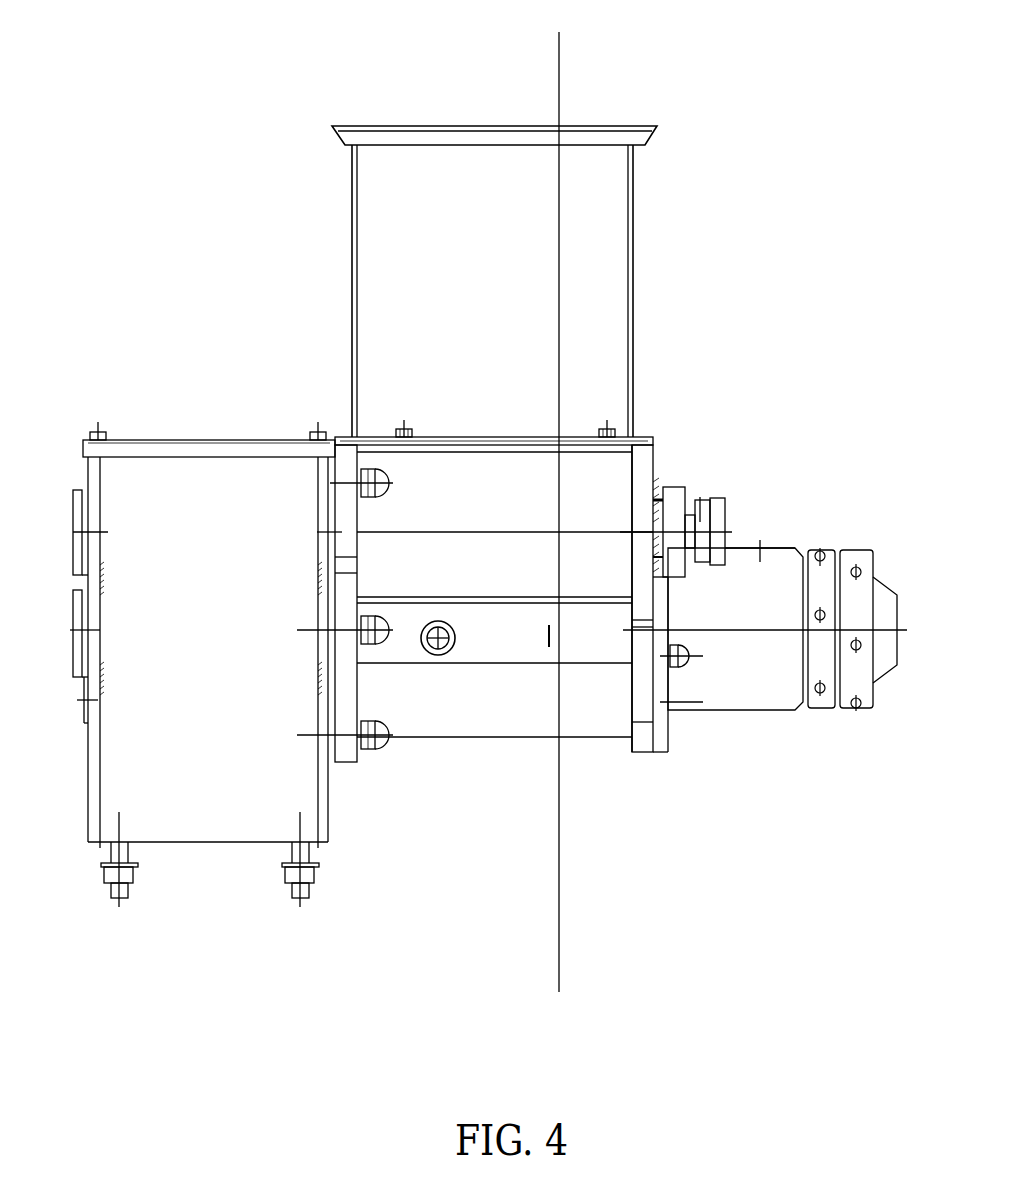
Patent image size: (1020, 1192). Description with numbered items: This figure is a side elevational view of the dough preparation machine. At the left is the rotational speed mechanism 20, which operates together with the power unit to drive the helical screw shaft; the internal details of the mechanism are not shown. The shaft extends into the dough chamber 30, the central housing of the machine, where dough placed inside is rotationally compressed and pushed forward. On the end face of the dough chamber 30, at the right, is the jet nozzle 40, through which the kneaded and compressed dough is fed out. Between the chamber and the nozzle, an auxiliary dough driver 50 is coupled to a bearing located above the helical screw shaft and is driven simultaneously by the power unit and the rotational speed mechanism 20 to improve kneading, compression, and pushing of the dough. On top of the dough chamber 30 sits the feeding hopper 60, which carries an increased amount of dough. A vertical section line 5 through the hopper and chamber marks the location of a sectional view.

The section line 5- 5 is at (608, 42).
The rotational speed mechanism 20 is at (193, 445).
The dough chamber 30 is at (480, 723).
The jet nozzle 40 is at (757, 700).
The auxiliary dough driver 50 is at (723, 475).
The feeding hopper 60 is at (372, 300).